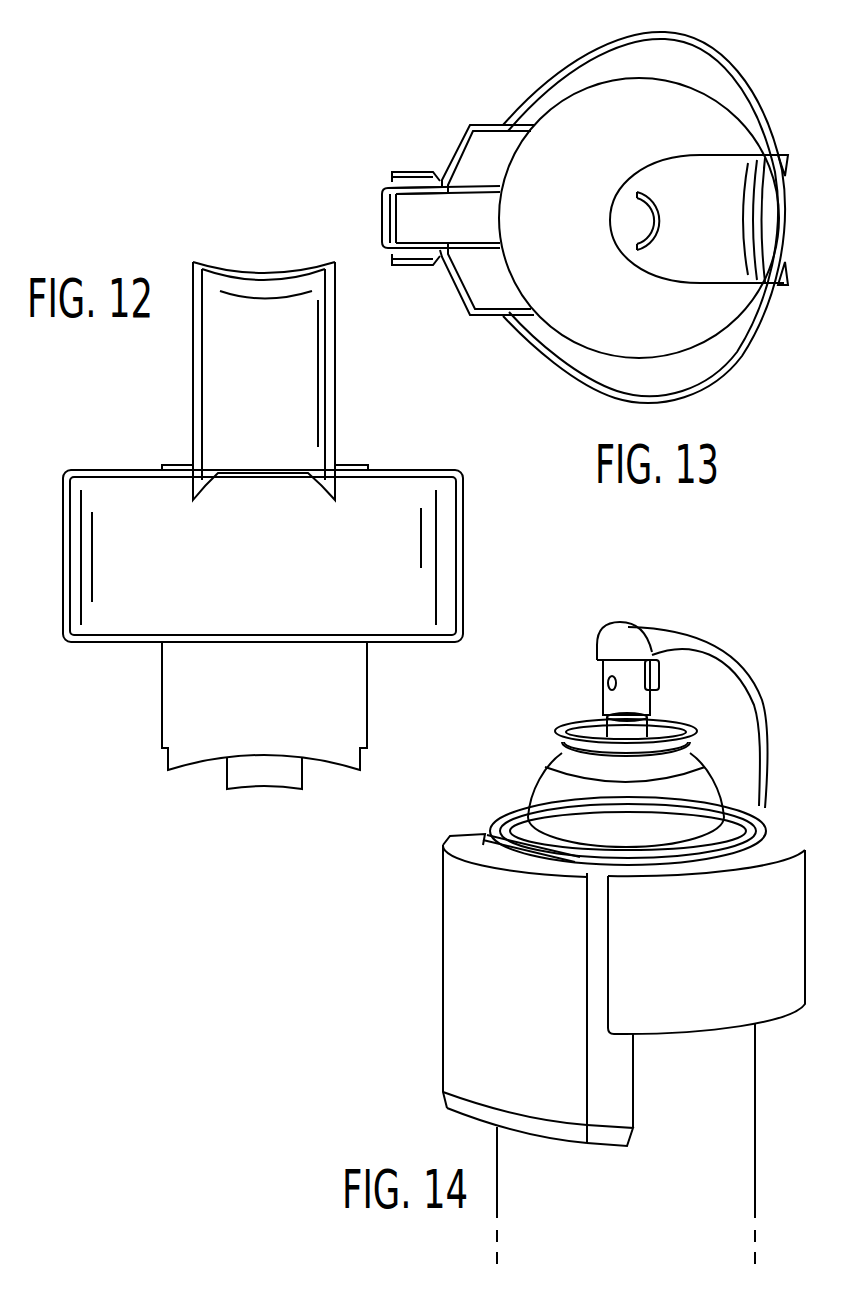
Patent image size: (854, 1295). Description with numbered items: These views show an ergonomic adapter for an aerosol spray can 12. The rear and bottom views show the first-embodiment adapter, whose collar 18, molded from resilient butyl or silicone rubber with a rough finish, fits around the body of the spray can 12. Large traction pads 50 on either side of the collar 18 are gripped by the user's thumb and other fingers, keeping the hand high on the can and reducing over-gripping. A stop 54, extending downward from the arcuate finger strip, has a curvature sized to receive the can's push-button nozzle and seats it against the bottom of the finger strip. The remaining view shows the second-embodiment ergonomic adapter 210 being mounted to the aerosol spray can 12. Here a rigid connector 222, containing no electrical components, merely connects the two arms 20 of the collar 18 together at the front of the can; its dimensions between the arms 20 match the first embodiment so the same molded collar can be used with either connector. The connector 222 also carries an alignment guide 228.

In FIG. 14, the aerosol spray can 12 is at (727, 1140).
In FIG. 12, the collar 18 is at (274, 572).
In FIG. 13, the collar 18 is at (588, 72).
In FIG. 14, the collar 18 is at (775, 842).
In FIG. 14, the collar arms 20 is at (701, 1010).
In FIG. 13, the traction pad 50 is at (680, 47).
In FIG. 13, the stop 54 is at (658, 204).
In FIG. 14, the ergonomic adapter 210 is at (748, 658).
In FIG. 14, the rigid connector 222 is at (470, 972).
In FIG. 14, the alignment guide 228 is at (470, 838).